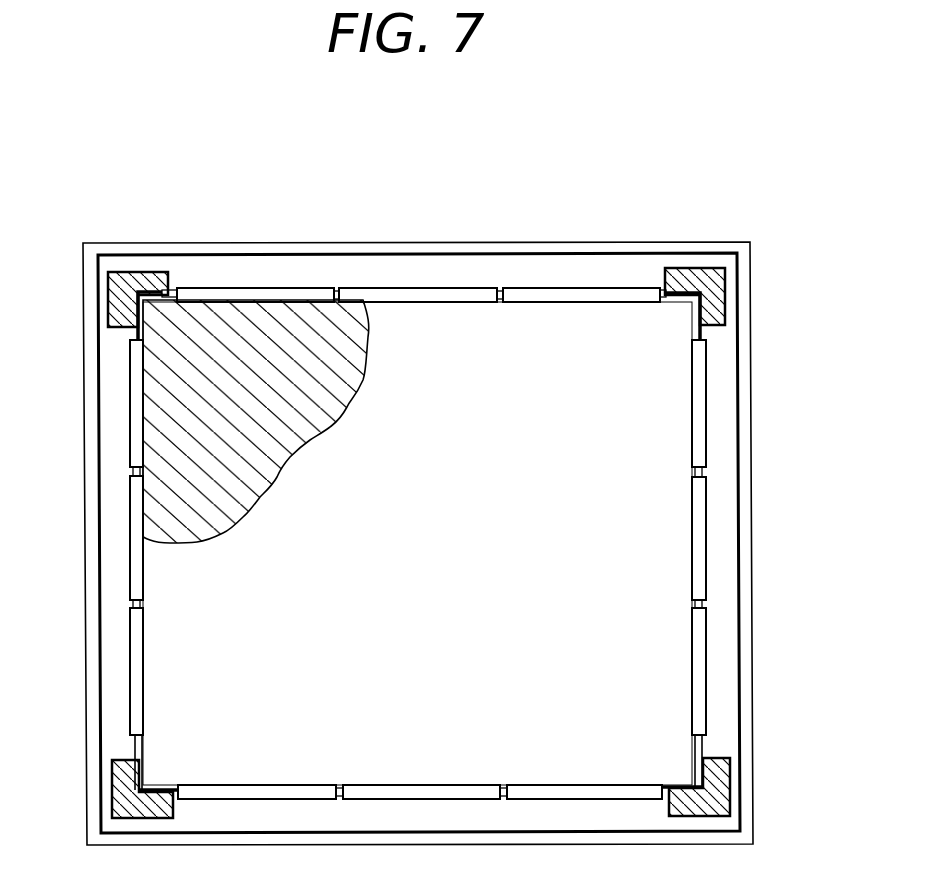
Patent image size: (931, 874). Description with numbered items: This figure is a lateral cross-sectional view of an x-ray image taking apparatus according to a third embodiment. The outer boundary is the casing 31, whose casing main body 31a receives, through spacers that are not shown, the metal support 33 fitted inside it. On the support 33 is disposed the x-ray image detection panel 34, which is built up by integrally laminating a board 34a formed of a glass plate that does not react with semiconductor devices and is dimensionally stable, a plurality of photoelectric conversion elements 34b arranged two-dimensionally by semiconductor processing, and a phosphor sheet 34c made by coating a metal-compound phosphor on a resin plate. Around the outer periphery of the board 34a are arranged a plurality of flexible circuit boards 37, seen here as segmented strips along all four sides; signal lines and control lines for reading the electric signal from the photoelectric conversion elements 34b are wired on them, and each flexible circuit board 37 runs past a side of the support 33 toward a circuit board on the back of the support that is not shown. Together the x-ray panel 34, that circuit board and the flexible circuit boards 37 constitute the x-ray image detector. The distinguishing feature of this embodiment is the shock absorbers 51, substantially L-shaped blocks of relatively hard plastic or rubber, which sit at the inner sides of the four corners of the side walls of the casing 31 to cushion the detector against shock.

The casing 31 is at (501, 239).
The casing main body 31a is at (740, 267).
The support 33 is at (135, 292).
The x-ray image detection panel 34 is at (417, 439).
The board 34a is at (162, 293).
The photoelectric conversion elements 34b is at (260, 328).
The phosphor sheet 34c is at (440, 352).
The flexible circuit boards 37 is at (603, 295).
The shock absorbers 51 is at (115, 297).